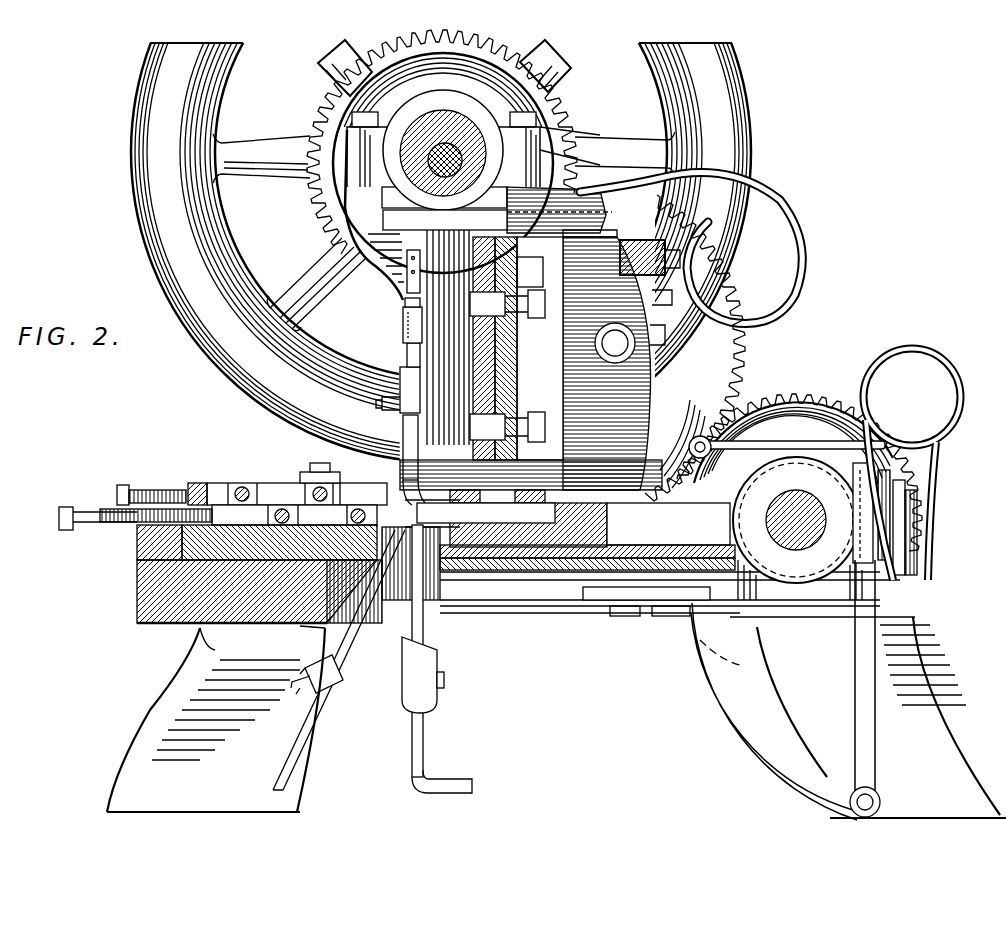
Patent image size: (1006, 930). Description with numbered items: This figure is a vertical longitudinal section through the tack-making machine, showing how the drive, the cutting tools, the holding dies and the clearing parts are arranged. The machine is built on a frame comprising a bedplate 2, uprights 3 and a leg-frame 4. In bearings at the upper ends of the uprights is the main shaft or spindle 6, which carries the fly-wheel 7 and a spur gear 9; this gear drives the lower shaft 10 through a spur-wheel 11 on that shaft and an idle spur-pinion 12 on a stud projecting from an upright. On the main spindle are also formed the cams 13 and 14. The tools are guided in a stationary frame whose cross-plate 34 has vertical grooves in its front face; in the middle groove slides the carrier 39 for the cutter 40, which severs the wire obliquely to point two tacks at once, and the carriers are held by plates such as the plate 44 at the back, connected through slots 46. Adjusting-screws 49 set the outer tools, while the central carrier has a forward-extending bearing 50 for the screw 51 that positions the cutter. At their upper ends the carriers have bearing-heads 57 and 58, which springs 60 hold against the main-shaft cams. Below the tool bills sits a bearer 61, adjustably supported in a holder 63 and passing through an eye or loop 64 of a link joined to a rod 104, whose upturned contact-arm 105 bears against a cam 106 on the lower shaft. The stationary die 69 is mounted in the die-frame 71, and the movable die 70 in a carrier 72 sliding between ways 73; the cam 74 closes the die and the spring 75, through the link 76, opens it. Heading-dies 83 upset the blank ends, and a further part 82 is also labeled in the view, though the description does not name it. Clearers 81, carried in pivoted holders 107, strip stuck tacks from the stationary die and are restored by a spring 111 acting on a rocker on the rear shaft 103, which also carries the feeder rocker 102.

The bedplate 2 is at (147, 595).
The uprights 3 is at (123, 456).
The leg-frame 4 is at (556, 717).
The main shaft or spindle 6 is at (402, 162).
The fly-wheel 7 is at (135, 181).
The gear 9 is at (575, 105).
The lower spindle or shaft 10 is at (797, 528).
The spur-wheel 11 is at (820, 395).
The idle spur-pinion 12 is at (748, 345).
The cam 13 is at (443, 150).
The cam 14 is at (443, 161).
The cross-plate 34 is at (515, 318).
The carrier 39 is at (407, 356).
The cutter 40 is at (402, 430).
The plate 44 is at (545, 385).
The slots 46 is at (500, 272).
The adjusting-screws 49 is at (406, 272).
The forward-extending bearing 50 is at (403, 335).
The screw 51 is at (405, 305).
The bearing-head 57 is at (556, 180).
The bearing-head 58 is at (497, 220).
The springs 60 is at (628, 184).
The bearer 61 is at (430, 598).
The holder 63 is at (444, 683).
The eye or loop 64 is at (430, 622).
The stationary die 69 is at (297, 497).
The movable die 70 is at (512, 523).
The die-frame 71 is at (157, 545).
The carrier 72 is at (668, 524).
The ways 73 is at (531, 481).
The cam 74 is at (853, 485).
The spring 75 is at (905, 525).
The link 76 is at (782, 440).
The clearers 81 is at (405, 628).
The lever 82 is at (520, 578).
The heading-dies 83 is at (413, 516).
The rocker 102 is at (880, 803).
The shaft 103 is at (872, 795).
The rod 104 is at (752, 640).
The contact-arm 105 is at (917, 545).
The cam 106 is at (890, 495).
The pivoted holders 107 is at (330, 690).
The spring 111 is at (920, 360).